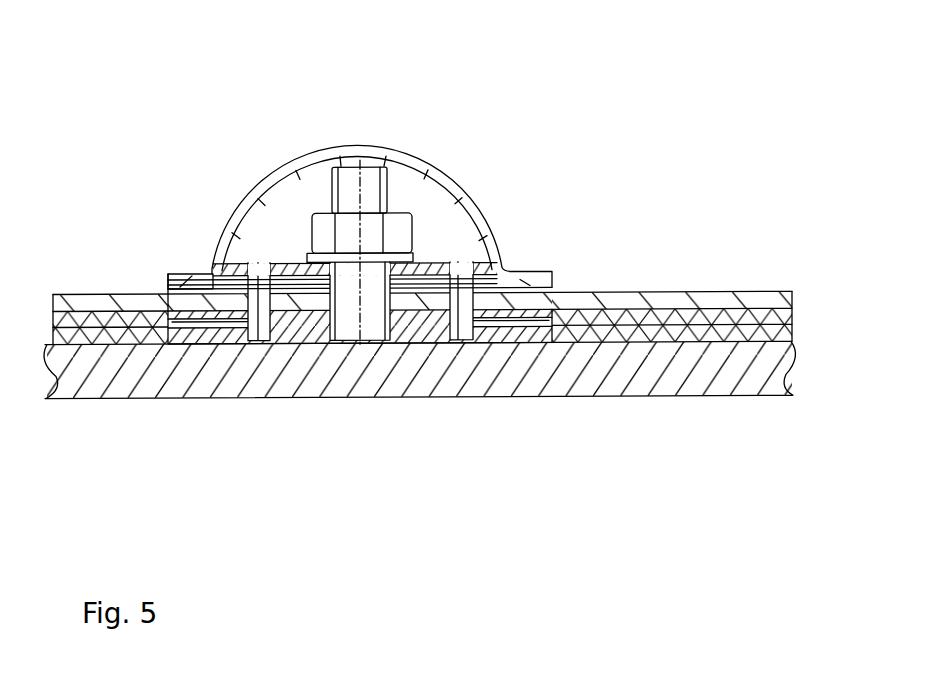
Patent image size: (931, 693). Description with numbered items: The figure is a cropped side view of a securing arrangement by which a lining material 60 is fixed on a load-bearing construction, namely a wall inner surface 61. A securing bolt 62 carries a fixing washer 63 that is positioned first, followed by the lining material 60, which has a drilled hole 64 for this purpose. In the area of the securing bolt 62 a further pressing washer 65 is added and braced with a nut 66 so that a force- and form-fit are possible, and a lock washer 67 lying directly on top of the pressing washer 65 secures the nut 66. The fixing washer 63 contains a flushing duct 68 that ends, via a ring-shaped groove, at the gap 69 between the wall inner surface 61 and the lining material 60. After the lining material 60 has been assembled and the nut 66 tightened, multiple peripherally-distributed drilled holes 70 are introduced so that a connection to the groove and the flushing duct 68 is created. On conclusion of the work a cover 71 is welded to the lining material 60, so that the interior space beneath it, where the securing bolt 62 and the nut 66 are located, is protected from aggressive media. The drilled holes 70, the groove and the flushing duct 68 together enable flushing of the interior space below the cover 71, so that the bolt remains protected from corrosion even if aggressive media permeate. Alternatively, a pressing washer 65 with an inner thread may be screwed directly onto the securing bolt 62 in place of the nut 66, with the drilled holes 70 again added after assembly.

The lining material 60 is at (610, 298).
The wall inner surface 61 is at (582, 375).
The securing bolt 62 is at (372, 183).
The fixing washer 63 is at (420, 330).
The drilled hole 64 is at (373, 340).
The pressing washer 65 is at (437, 267).
The nut 66 is at (317, 230).
The lock washer 67 is at (310, 258).
The flushing duct 68 is at (205, 327).
The gap 69 is at (93, 345).
The drilled holes 70 is at (210, 270).
The cover 71 is at (335, 150).